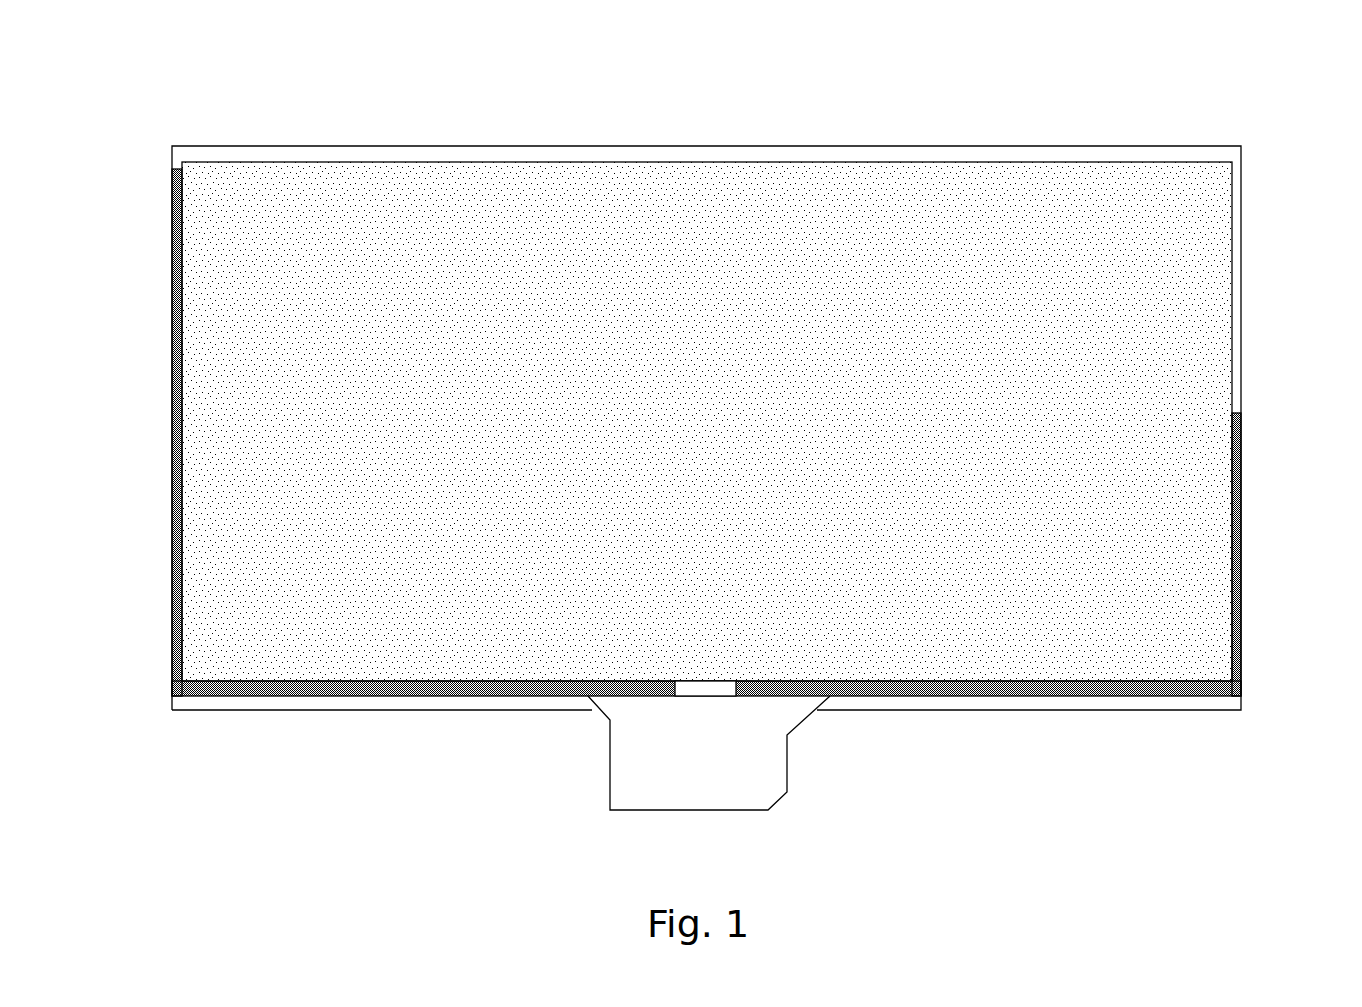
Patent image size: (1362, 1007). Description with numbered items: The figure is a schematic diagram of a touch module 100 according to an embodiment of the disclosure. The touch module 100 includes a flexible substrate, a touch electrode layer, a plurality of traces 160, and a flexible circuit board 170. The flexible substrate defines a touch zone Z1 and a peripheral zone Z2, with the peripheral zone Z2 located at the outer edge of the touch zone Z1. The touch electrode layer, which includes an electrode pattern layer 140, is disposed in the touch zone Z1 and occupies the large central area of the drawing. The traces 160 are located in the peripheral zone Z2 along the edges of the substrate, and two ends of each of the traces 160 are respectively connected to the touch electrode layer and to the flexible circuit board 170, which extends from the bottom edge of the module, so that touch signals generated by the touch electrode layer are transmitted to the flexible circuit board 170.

The touch module 100 is at (1340, 55).
The electrode pattern layer 140 is at (689, 178).
The traces 160 is at (178, 492).
The flexible circuit board 170 is at (615, 771).
The touch zone Z1 is at (1222, 257).
The peripheral zone Z2 is at (232, 710).